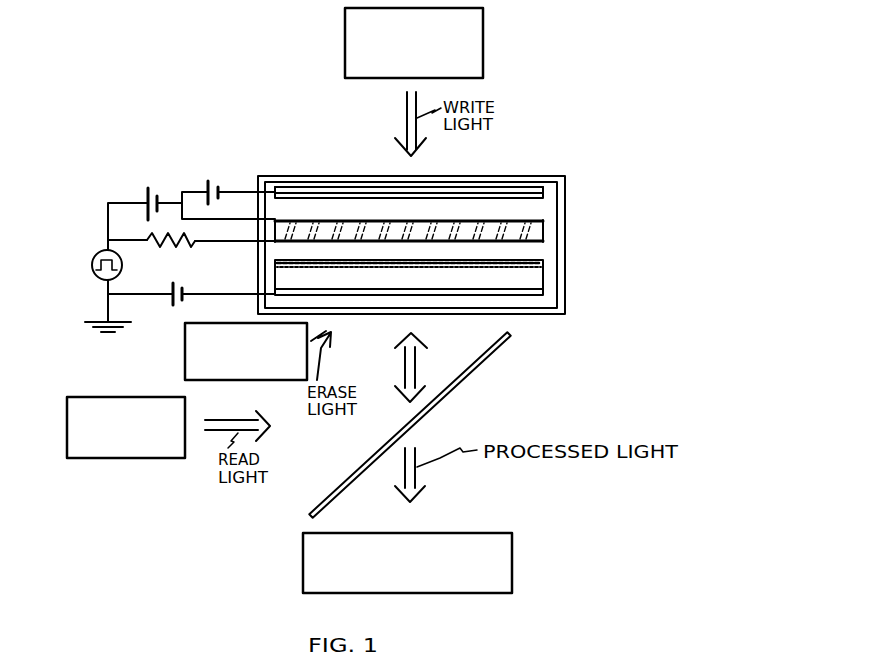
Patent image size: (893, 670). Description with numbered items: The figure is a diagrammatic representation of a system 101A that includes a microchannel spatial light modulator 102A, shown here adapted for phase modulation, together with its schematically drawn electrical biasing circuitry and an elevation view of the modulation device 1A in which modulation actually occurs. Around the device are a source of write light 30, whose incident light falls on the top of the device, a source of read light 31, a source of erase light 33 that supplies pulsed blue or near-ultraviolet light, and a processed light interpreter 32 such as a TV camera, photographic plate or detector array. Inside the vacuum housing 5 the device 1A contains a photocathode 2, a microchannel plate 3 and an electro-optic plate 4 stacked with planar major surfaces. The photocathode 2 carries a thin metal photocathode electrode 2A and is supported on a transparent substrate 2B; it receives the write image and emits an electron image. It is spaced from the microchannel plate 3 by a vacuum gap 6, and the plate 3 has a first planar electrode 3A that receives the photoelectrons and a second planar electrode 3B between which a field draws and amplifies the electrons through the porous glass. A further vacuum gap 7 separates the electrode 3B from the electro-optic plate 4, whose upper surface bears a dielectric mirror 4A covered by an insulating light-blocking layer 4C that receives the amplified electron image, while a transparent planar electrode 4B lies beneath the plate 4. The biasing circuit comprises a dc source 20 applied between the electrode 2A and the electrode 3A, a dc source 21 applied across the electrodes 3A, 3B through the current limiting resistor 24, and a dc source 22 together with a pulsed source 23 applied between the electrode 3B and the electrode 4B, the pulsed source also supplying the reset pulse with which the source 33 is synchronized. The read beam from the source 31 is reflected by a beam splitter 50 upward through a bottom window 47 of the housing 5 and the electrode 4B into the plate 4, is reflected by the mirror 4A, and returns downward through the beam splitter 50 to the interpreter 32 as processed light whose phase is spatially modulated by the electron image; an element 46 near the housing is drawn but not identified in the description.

The modulation device 1A is at (462, 178).
The photocathode 2 is at (527, 197).
The photocathode electrode 2A is at (510, 192).
The transparent substrate 2B is at (300, 190).
The microchannel plate 3 is at (300, 228).
The first planar electrode 3A is at (367, 220).
The second planar electrode 3B is at (362, 243).
The electro-optic plate 4 is at (400, 284).
The dielectric mirror 4A is at (500, 269).
The transparent planar electrode 4B is at (443, 294).
The insulating light-blocking layer 4C is at (278, 258).
The vacuum housing 5 is at (258, 303).
The vacuum gap 6 is at (343, 207).
The further vacuum gap 7 is at (515, 256).
The dc source 20 is at (208, 182).
The dc source 21 is at (147, 191).
The dc source 22 is at (181, 305).
The pulsed source 23 is at (123, 266).
The electric current limiting resistor 24 is at (196, 239).
The source of write light 30 is at (485, 52).
The source of read light 31 is at (145, 459).
The processed light interpreter 32 is at (495, 533).
The source of erase light 33 is at (185, 338).
The cell housing 46 is at (312, 176).
The bottom window 47 is at (543, 315).
The beam splitter 50 is at (440, 403).
The system 101A is at (216, 501).
The microchannel spatial light modulator 102A is at (568, 253).